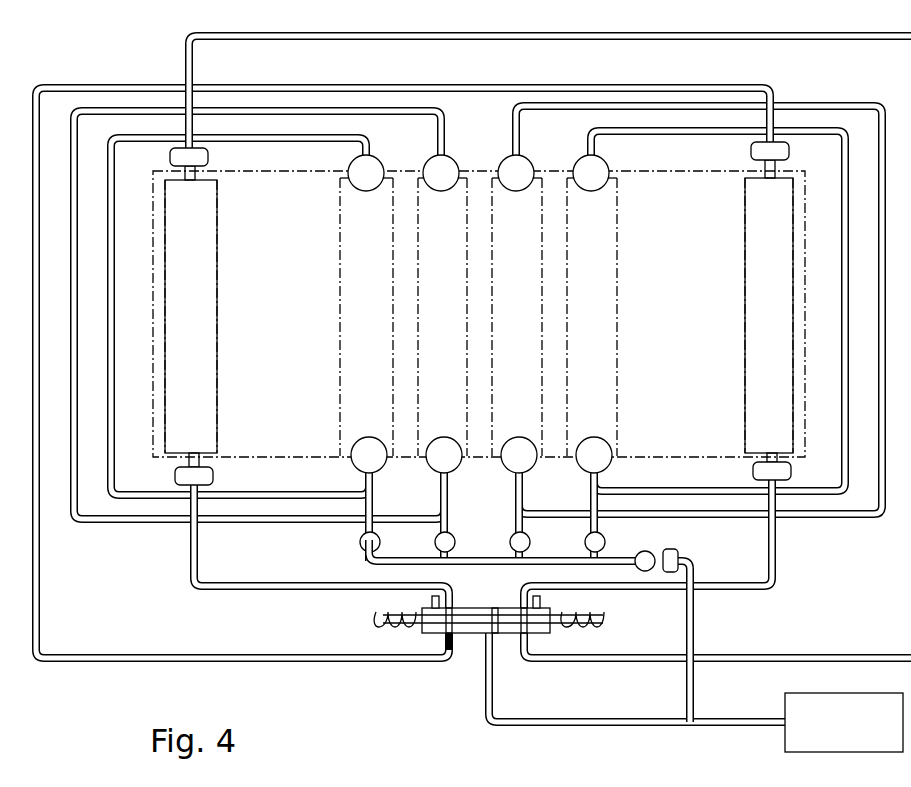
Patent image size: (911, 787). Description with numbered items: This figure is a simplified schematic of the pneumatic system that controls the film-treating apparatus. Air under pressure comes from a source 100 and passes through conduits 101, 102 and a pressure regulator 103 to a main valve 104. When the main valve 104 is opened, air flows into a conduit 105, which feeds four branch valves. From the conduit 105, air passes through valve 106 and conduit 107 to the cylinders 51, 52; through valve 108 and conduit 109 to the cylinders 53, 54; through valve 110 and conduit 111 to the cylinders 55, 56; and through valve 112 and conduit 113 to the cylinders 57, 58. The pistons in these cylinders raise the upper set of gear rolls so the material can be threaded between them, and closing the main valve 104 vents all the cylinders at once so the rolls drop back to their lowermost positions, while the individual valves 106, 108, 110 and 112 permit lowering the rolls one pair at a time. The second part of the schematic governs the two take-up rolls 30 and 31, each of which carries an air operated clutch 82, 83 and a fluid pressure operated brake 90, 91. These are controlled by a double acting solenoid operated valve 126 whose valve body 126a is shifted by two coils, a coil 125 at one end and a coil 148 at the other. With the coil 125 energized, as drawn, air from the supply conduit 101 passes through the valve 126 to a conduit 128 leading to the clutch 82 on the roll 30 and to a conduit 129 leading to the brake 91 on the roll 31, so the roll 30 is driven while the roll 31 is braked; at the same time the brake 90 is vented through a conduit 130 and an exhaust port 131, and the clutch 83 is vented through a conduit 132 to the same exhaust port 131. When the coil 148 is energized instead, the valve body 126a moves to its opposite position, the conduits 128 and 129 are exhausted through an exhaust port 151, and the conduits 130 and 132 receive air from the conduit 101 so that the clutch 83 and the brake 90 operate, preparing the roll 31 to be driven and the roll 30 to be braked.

The roll 30 is at (757, 343).
The roll 31 is at (208, 323).
The cylinder 51 is at (362, 463).
The cylinder 52 is at (356, 164).
The cylinder 53 is at (440, 464).
The cylinder 54 is at (432, 163).
The cylinder 55 is at (513, 464).
The cylinder 56 is at (507, 163).
The cylinder 57 is at (588, 463).
The cylinder 58 is at (582, 163).
The air operated clutch 82 is at (789, 151).
The air operated clutch 83 is at (170, 158).
The fluid pressure operated brake 90 is at (791, 472).
The fluid pressure operated brake 91 is at (175, 474).
The source of fluid pressure 100 is at (794, 738).
The conduit 101 is at (767, 718).
The conduit 102 is at (695, 683).
The pressure regulator 103 is at (666, 549).
The main valve 104 is at (636, 565).
The conduit 105 is at (457, 559).
The valve 106 is at (360, 545).
The conduit 107 is at (312, 494).
The valve 108 is at (435, 545).
The conduit 109 is at (433, 516).
The valve 110 is at (514, 535).
The conduit 111 is at (580, 511).
The valve 112 is at (585, 545).
The conduit 113 is at (716, 488).
The coil 125 is at (594, 628).
The double acting solenoid operated valve 126 is at (476, 648).
The valve body 126a is at (459, 616).
The conduit 128 is at (283, 663).
The conduit 129 is at (282, 590).
The conduit 130 is at (694, 590).
The exhaust port 131 is at (541, 601).
The conduit 132 is at (688, 40).
The coil 148 is at (382, 628).
The exhaust port 151 is at (430, 600).